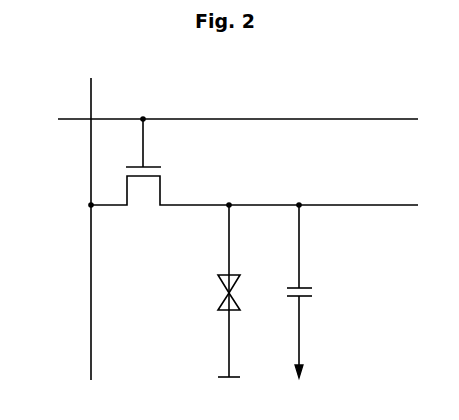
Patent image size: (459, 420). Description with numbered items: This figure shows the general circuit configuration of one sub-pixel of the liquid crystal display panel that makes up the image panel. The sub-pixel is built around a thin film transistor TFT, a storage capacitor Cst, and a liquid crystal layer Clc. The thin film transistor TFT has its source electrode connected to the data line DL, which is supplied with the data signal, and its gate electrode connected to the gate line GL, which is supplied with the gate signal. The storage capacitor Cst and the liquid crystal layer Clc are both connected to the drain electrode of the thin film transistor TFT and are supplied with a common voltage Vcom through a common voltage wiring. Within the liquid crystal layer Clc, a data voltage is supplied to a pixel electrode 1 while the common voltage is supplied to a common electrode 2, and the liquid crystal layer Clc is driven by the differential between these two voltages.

The pixel electrode 1 is at (222, 275).
The common electrode 2 is at (222, 310).
The data line DL is at (91, 217).
The gate line GL is at (225, 119).
The thin film transistor TFT is at (254, 162).
The liquid crystal layer Clc is at (226, 291).
The storage capacitor Cst is at (314, 291).
The common voltage Vcom is at (231, 390).